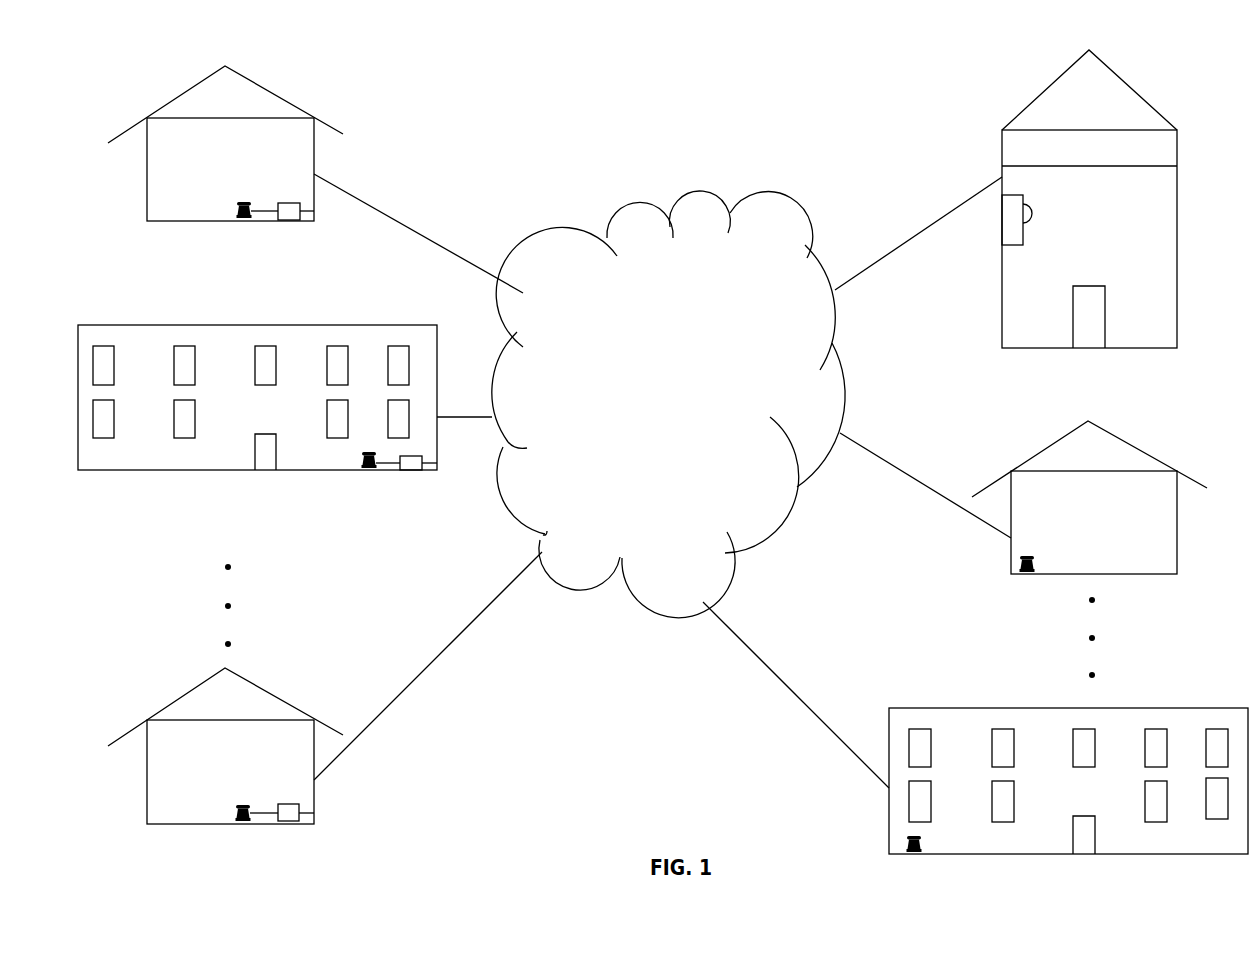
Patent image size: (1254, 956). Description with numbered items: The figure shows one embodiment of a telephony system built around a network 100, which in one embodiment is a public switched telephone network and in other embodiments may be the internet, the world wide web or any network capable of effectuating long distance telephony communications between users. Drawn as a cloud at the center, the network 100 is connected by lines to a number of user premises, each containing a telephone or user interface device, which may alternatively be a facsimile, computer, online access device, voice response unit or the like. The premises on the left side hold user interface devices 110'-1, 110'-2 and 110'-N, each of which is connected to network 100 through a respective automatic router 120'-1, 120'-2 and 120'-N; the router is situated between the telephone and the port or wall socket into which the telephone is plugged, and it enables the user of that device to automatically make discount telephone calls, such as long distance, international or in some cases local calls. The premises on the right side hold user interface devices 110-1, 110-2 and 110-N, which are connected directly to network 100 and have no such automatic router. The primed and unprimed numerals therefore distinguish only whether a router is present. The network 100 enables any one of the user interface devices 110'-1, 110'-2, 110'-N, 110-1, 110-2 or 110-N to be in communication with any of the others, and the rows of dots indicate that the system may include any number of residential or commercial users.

The network 100 is at (668, 404).
The user interface device connected to automatic router 110'-1 is at (225, 175).
The automatic router 120'-1 is at (285, 243).
The user interface device connected to automatic router 110'-2 is at (257, 428).
The automatic router 120'-2 is at (350, 493).
The user interface device connected to automatic router 110'-N is at (225, 776).
The automatic router 120'-N is at (283, 844).
The user interface device 110-1 is at (1002, 292).
The user interface device 110-2 is at (1023, 577).
The user interface device 110-N is at (906, 842).